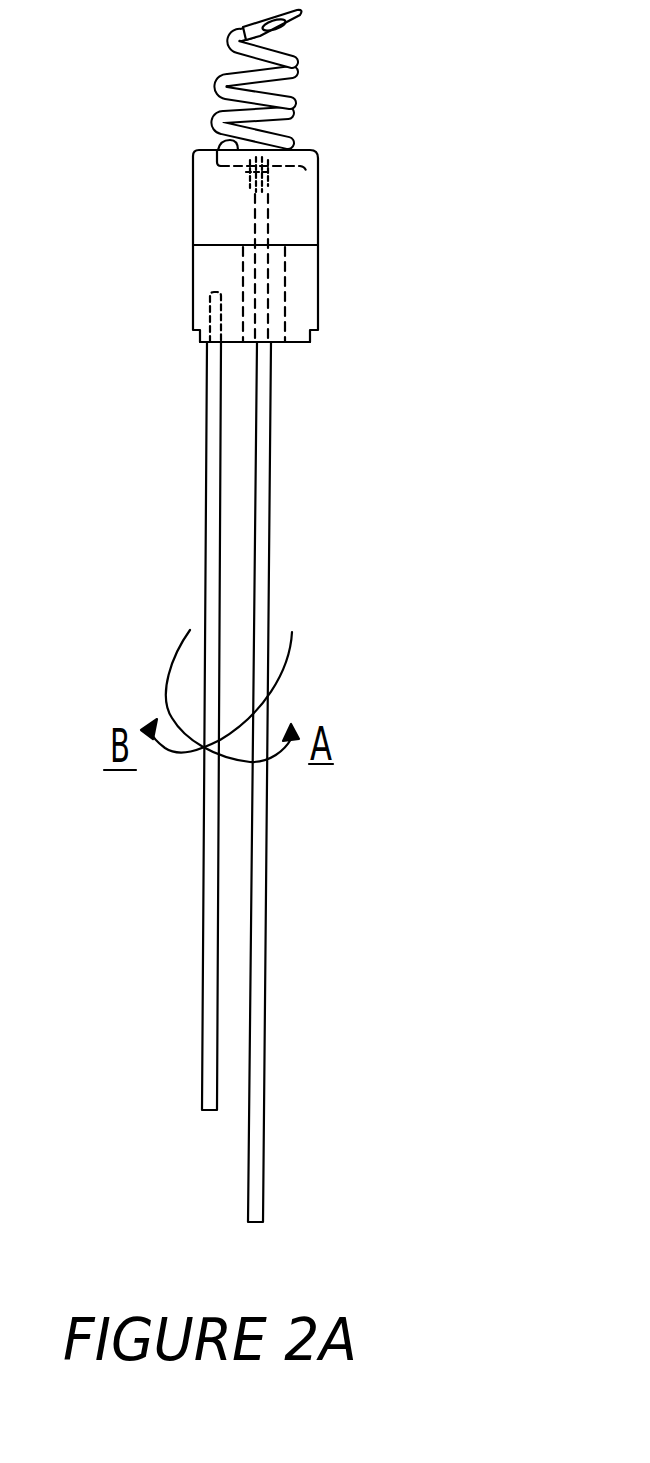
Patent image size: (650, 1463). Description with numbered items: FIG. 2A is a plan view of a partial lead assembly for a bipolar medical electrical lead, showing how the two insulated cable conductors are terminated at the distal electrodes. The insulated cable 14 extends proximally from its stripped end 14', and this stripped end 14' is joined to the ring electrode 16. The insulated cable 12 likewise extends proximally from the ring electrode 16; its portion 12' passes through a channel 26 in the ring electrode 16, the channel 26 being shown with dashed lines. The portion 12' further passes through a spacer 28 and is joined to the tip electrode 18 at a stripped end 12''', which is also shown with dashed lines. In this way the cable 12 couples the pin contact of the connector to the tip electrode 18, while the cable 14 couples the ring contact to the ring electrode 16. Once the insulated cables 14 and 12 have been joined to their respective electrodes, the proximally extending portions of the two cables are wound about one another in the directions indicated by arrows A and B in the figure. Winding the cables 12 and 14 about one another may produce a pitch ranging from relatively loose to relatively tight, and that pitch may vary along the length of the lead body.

The tip electrode 18 is at (292, 70).
The stripped end of cable conductor 12 12''' is at (353, 149).
The spacer 28 is at (300, 202).
The ring electrode 16 is at (306, 279).
The portion of cable conductor 12 12' is at (348, 286).
The channel 26 is at (286, 338).
The insulated cable conductor 12 is at (305, 782).
The stripped end of cable conductor 14 14' is at (152, 302).
The insulated cable conductor 14 is at (153, 726).